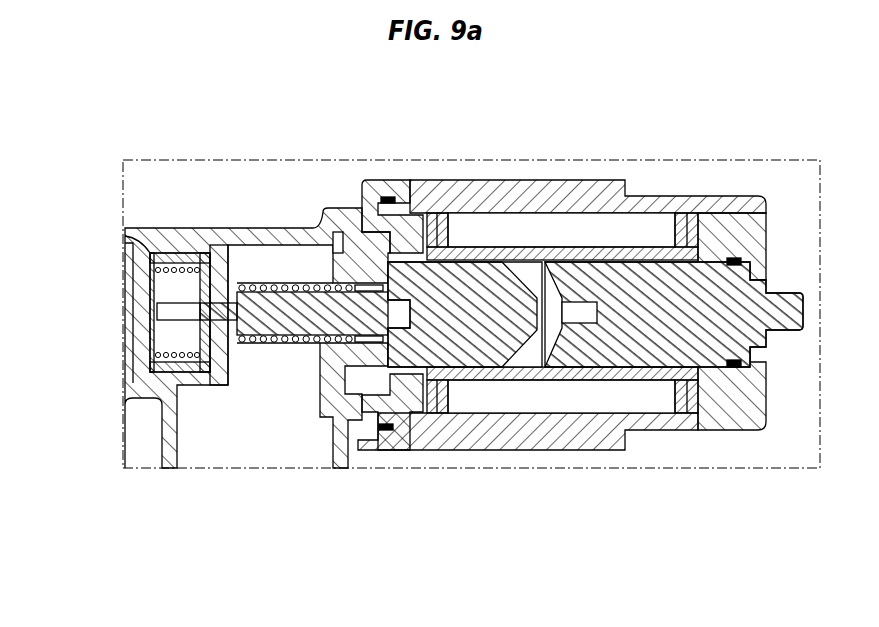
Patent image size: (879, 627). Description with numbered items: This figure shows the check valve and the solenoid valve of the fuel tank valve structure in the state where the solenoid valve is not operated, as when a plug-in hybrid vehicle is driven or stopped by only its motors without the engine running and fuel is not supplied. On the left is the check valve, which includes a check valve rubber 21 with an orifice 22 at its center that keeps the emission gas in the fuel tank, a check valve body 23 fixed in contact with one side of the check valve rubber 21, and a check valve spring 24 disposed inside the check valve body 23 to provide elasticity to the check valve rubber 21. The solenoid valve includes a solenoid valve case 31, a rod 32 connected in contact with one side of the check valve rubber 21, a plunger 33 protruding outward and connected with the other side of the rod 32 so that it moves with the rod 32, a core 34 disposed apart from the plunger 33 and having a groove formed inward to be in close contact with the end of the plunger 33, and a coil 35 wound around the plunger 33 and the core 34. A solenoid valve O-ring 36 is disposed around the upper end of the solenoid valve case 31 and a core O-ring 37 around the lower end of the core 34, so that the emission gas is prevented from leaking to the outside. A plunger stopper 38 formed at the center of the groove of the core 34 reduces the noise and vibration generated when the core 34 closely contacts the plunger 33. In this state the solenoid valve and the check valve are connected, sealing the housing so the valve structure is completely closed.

The check valve rubber 21 is at (226, 278).
The orifice 22 is at (226, 313).
The check valve body 23 is at (190, 250).
The check valve spring 24 is at (127, 233).
The solenoid valve case 31 is at (510, 207).
The rod 32 is at (312, 315).
The plunger 33 is at (474, 313).
The core 34 is at (713, 312).
The coil 35 is at (610, 230).
The solenoid valve O-ring 36 is at (388, 197).
The core O-ring 37 is at (730, 258).
The plunger stopper 38 is at (587, 313).